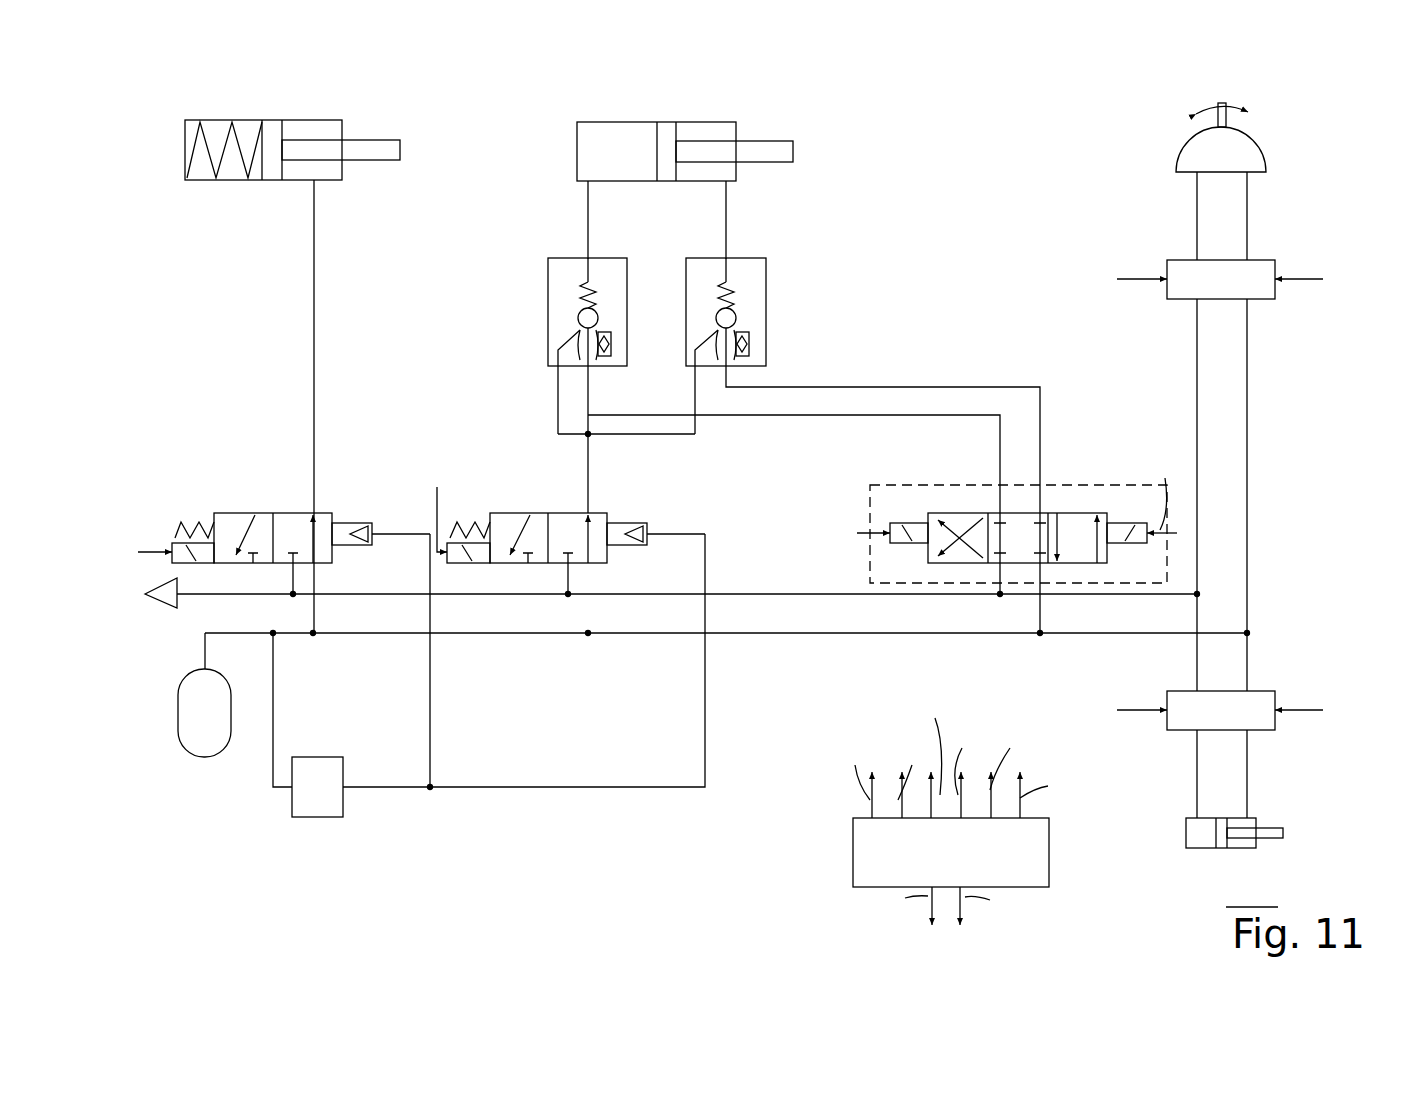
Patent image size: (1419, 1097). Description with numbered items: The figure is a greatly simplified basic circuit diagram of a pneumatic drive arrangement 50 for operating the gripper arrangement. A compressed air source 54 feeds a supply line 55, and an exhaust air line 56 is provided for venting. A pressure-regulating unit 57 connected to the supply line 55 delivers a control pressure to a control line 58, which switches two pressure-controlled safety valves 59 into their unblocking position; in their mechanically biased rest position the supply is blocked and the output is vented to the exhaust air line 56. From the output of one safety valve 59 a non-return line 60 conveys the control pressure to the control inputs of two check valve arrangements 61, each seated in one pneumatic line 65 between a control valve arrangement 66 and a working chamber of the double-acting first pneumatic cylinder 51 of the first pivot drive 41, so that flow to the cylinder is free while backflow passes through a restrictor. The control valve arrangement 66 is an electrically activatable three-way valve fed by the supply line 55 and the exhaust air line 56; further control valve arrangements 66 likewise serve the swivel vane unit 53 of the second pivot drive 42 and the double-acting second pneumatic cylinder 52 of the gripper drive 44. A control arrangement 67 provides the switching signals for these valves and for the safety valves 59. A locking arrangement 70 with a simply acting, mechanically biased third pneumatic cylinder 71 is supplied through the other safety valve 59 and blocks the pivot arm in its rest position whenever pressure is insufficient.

The first pivot drive 41 is at (734, 161).
The second pivot drive 42 is at (1160, 152).
The gripper drive 44 is at (1238, 807).
The pneumatic drive arrangement 50 is at (1262, 443).
The first pneumatic cylinder 51 is at (698, 118).
The second pneumatic cylinder 52 is at (1184, 836).
The swivel vane unit 53 is at (1248, 156).
The compressed air source 54 is at (195, 745).
The supply line 55 is at (806, 637).
The exhaust air line 56 is at (796, 590).
The pressure-regulating unit 57 is at (333, 805).
The control line 58 is at (573, 790).
The safety valve 59 is at (245, 497).
The non-return line 60 is at (557, 395).
The check valve arrangement 61 is at (550, 279).
The pneumatic line 65 is at (866, 386).
The control valve arrangement 66 is at (1126, 483).
The control arrangement 67 is at (862, 838).
The locking arrangement 70 is at (323, 343).
The third pneumatic cylinder 71 is at (296, 118).